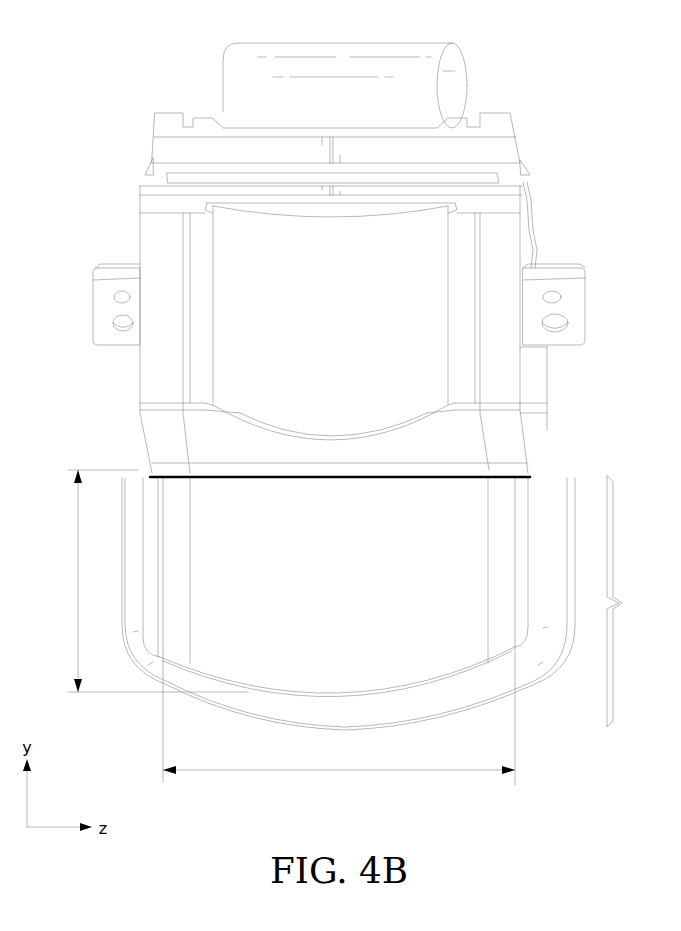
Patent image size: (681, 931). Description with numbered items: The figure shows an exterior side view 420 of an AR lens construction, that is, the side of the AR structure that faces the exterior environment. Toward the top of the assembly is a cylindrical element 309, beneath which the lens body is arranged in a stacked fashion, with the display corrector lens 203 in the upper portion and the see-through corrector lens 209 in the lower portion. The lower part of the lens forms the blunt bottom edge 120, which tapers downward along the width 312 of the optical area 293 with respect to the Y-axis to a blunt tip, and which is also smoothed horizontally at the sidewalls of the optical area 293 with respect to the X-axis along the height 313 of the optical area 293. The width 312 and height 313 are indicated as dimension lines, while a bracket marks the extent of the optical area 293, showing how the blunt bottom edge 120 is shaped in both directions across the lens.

The exterior side view 420 is at (80, 80).
The cylindrical shaft 309 is at (346, 53).
The display corrector lens 203 is at (350, 318).
The see-through corrector lens 209 is at (356, 586).
The blunt bottom edge 120 is at (532, 675).
The height 313 is at (78, 617).
The width 312 is at (405, 771).
The optical area 293 is at (637, 601).